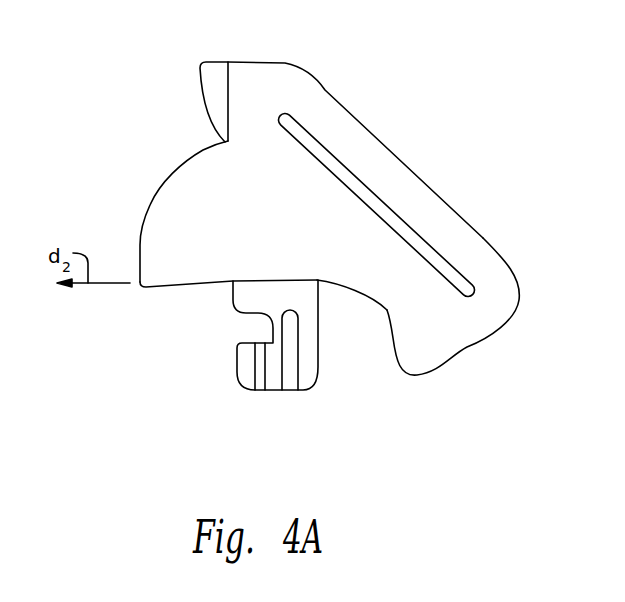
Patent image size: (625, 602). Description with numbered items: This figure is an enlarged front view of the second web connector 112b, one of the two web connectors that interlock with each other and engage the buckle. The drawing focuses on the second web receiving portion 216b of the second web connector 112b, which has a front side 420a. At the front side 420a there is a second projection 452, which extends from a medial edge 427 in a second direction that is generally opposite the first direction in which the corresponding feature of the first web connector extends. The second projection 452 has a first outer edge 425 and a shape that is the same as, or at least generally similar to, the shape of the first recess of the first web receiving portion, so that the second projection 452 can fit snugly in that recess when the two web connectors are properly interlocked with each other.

The second web connector 112b is at (433, 149).
The medial edge 427 is at (221, 80).
The front side 420a is at (283, 90).
The first outer edge 425 is at (170, 184).
The second projection 452 is at (167, 263).
The second web receiving portion 216b is at (435, 348).